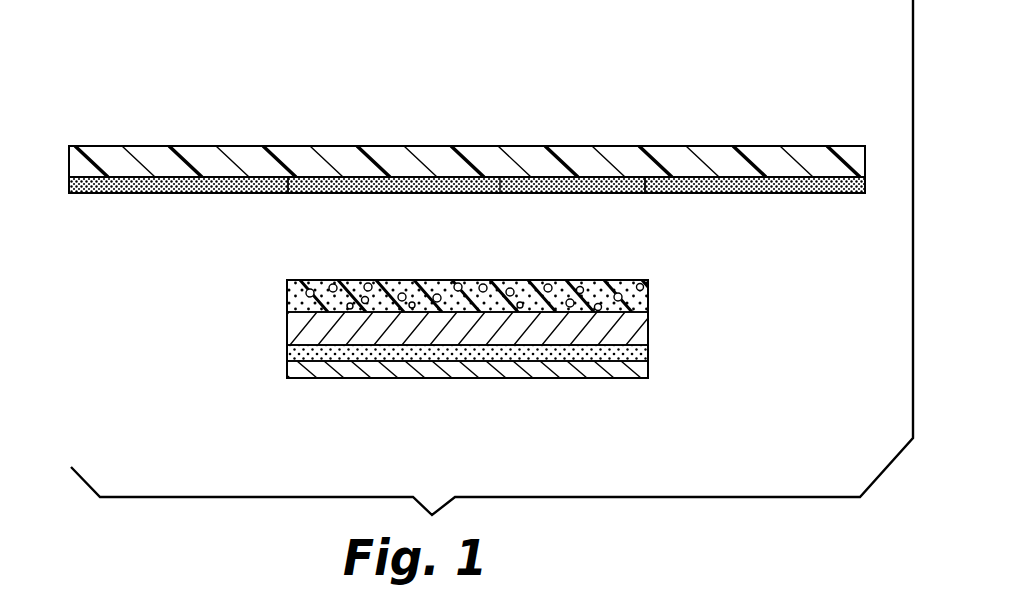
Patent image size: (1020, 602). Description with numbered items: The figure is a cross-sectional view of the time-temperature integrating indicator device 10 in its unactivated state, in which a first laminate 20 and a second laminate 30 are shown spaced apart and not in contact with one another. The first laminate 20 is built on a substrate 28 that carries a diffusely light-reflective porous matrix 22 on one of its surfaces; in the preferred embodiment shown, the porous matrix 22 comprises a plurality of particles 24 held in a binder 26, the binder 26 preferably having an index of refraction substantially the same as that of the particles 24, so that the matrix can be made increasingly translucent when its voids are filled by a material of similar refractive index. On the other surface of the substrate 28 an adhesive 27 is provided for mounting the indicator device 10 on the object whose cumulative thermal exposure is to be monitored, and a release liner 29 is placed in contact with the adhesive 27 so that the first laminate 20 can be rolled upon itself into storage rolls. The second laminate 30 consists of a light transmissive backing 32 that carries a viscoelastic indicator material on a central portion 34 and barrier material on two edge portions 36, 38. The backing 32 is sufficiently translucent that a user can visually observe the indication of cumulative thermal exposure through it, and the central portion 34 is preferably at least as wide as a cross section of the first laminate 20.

The time-temperature integrating indicator device 10 is at (716, 79).
The first laminate 20 is at (653, 317).
The diffusely light-reflective porous matrix 22 is at (290, 292).
The particles 24 is at (458, 282).
The binder 26 is at (602, 285).
The adhesive 27 is at (290, 352).
The substrate 28 is at (297, 330).
The release liner 29 is at (337, 371).
The second laminate 30 is at (519, 143).
The light transmissive backing 32 is at (252, 146).
The central portion 34 is at (509, 193).
The edge portion 36 is at (779, 193).
The edge portion 38 is at (187, 193).